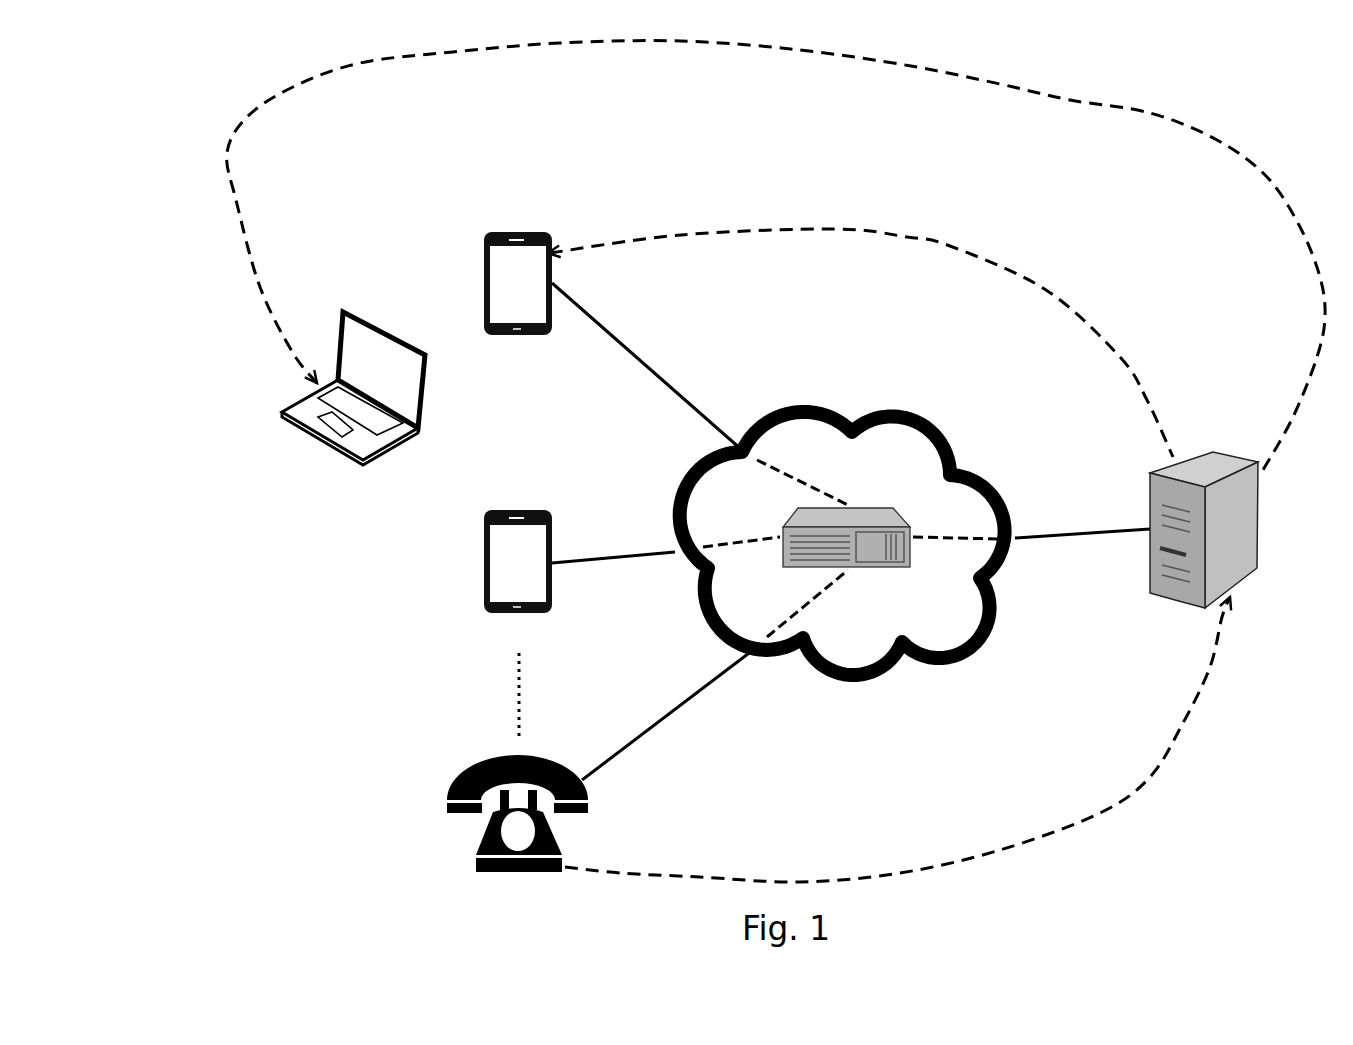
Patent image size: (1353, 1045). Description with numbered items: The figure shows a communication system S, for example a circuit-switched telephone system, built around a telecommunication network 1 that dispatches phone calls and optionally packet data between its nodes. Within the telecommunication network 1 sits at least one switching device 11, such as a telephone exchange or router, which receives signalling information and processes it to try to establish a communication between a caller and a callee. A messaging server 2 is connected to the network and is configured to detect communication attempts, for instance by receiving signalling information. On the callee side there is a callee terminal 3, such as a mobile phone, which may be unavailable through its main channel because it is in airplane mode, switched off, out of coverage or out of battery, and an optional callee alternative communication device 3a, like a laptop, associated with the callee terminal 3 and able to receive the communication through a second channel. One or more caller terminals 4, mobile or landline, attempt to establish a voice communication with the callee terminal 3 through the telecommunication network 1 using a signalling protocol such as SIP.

The communication system S is at (185, 145).
The telecommunication network 1 is at (818, 400).
The switching device 11 is at (873, 513).
The messaging server 2 is at (1222, 467).
The callee terminal 3 is at (483, 288).
The callee alternative communication device 3a is at (280, 412).
The caller terminal 4 is at (483, 547).